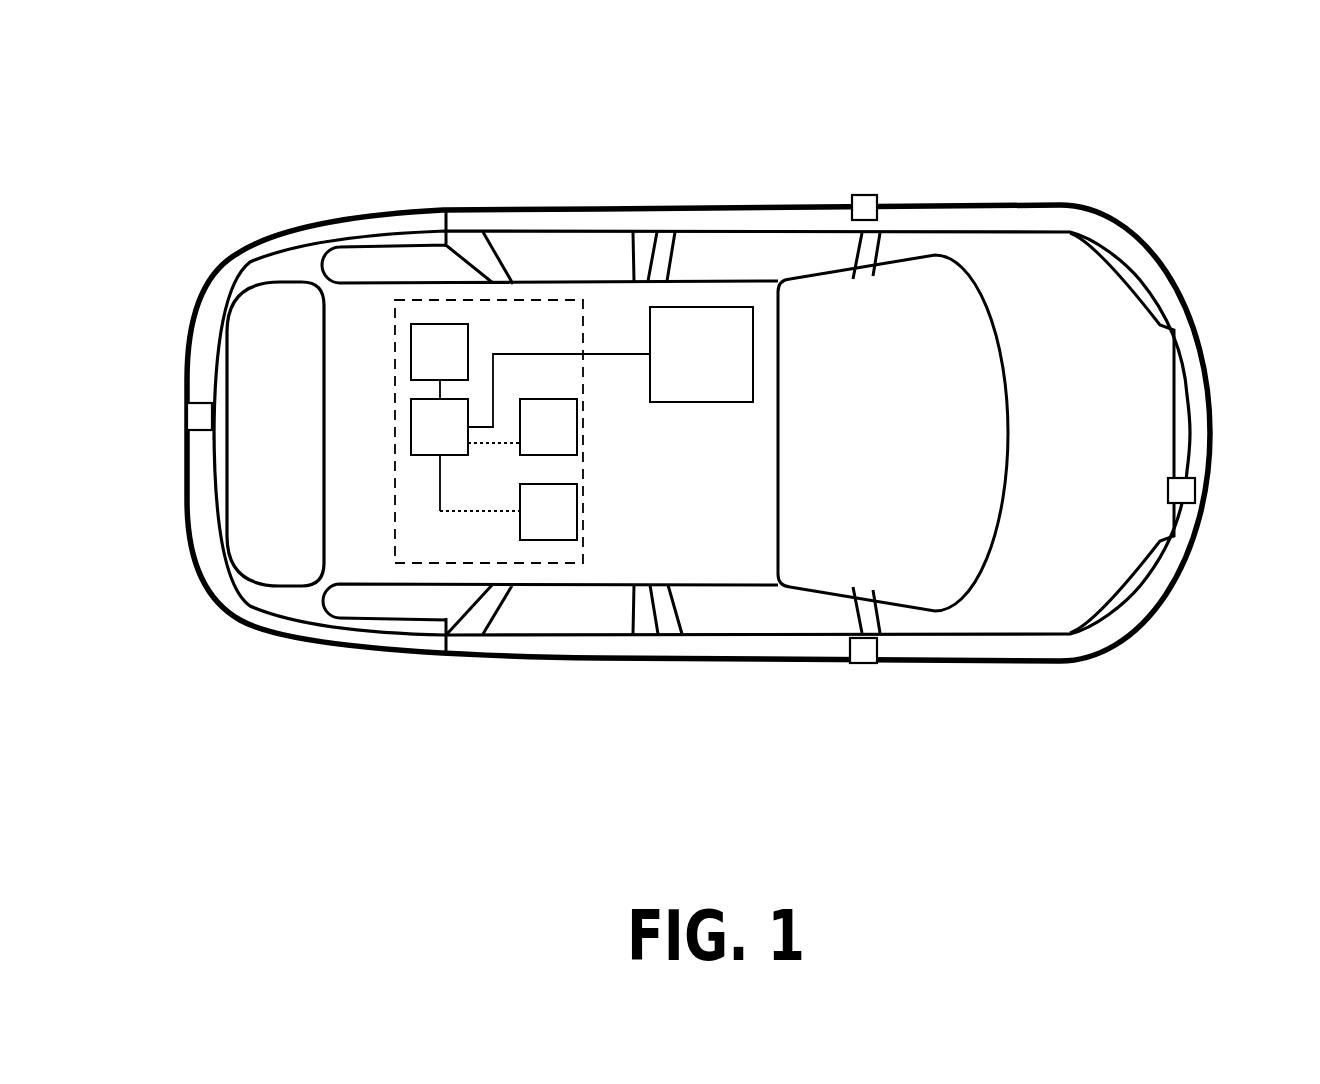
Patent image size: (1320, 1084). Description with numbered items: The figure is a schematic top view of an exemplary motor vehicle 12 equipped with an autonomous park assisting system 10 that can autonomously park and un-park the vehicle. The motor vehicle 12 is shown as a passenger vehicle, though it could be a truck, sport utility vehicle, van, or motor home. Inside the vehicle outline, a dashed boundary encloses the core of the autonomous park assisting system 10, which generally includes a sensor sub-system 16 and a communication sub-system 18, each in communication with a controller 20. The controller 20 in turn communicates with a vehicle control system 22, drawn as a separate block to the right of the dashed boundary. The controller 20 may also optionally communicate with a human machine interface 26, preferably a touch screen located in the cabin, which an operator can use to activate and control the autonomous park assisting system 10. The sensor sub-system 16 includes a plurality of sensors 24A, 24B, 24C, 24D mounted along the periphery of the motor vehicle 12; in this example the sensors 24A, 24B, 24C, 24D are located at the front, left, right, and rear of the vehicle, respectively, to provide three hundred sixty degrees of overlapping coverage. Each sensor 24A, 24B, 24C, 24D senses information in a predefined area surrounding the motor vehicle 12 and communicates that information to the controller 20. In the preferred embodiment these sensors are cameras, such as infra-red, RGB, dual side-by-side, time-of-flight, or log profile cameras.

The autonomous park assisting system 10 is at (492, 563).
The motor vehicle 12 is at (1104, 408).
The sensor sub-system 16 is at (454, 364).
The communication sub-system 18 is at (562, 524).
The controller 20 is at (454, 439).
The vehicle control system 22 is at (715, 366).
The sensor 24A is at (1190, 504).
The sensor 24B is at (863, 194).
The sensor 24C is at (860, 664).
The sensor 24D is at (199, 402).
The human machine interface 26 is at (562, 439).